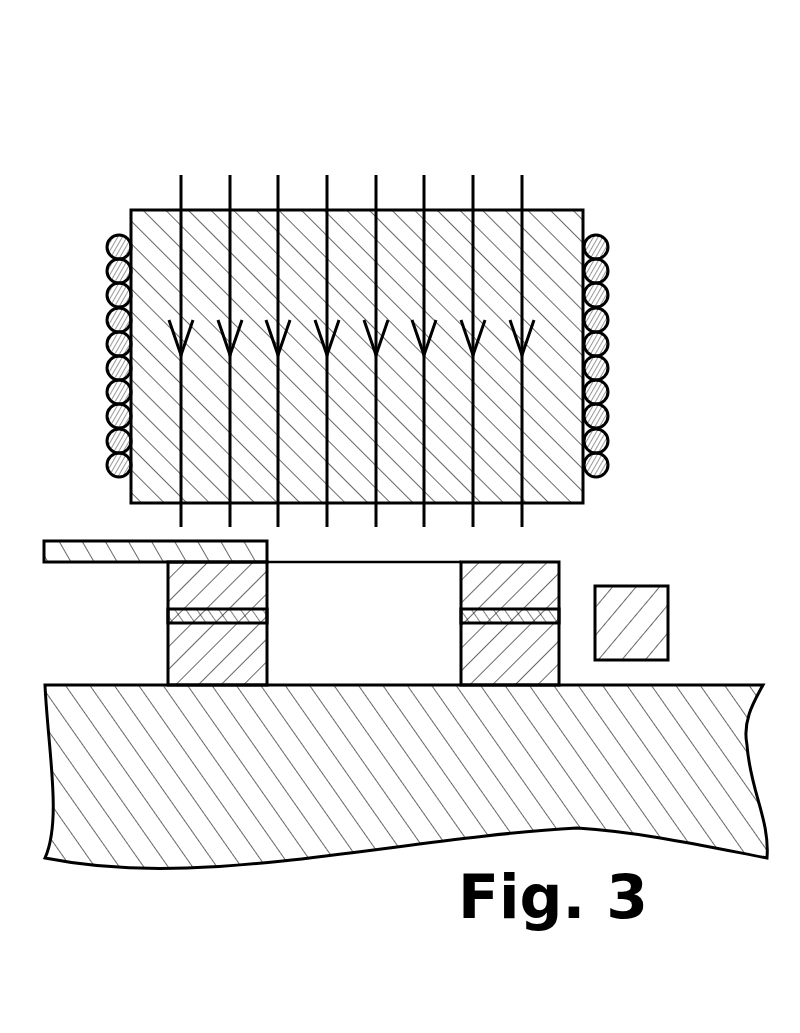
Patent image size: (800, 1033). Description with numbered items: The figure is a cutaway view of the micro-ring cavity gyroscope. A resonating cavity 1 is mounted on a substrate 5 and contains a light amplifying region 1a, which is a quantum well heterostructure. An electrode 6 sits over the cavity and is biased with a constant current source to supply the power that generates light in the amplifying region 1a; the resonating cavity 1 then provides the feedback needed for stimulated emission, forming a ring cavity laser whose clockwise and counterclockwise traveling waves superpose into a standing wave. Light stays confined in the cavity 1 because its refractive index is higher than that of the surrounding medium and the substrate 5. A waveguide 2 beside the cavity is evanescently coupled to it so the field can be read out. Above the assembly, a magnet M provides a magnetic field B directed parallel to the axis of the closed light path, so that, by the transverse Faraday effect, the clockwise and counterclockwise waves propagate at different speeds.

The magnet M is at (168, 257).
The magnetic field B is at (424, 185).
The resonating cavity 1 is at (500, 666).
The light amplifying region 1a is at (562, 596).
The waveguide 2 is at (645, 600).
The substrate 5 is at (85, 707).
The electrode 6 is at (92, 540).